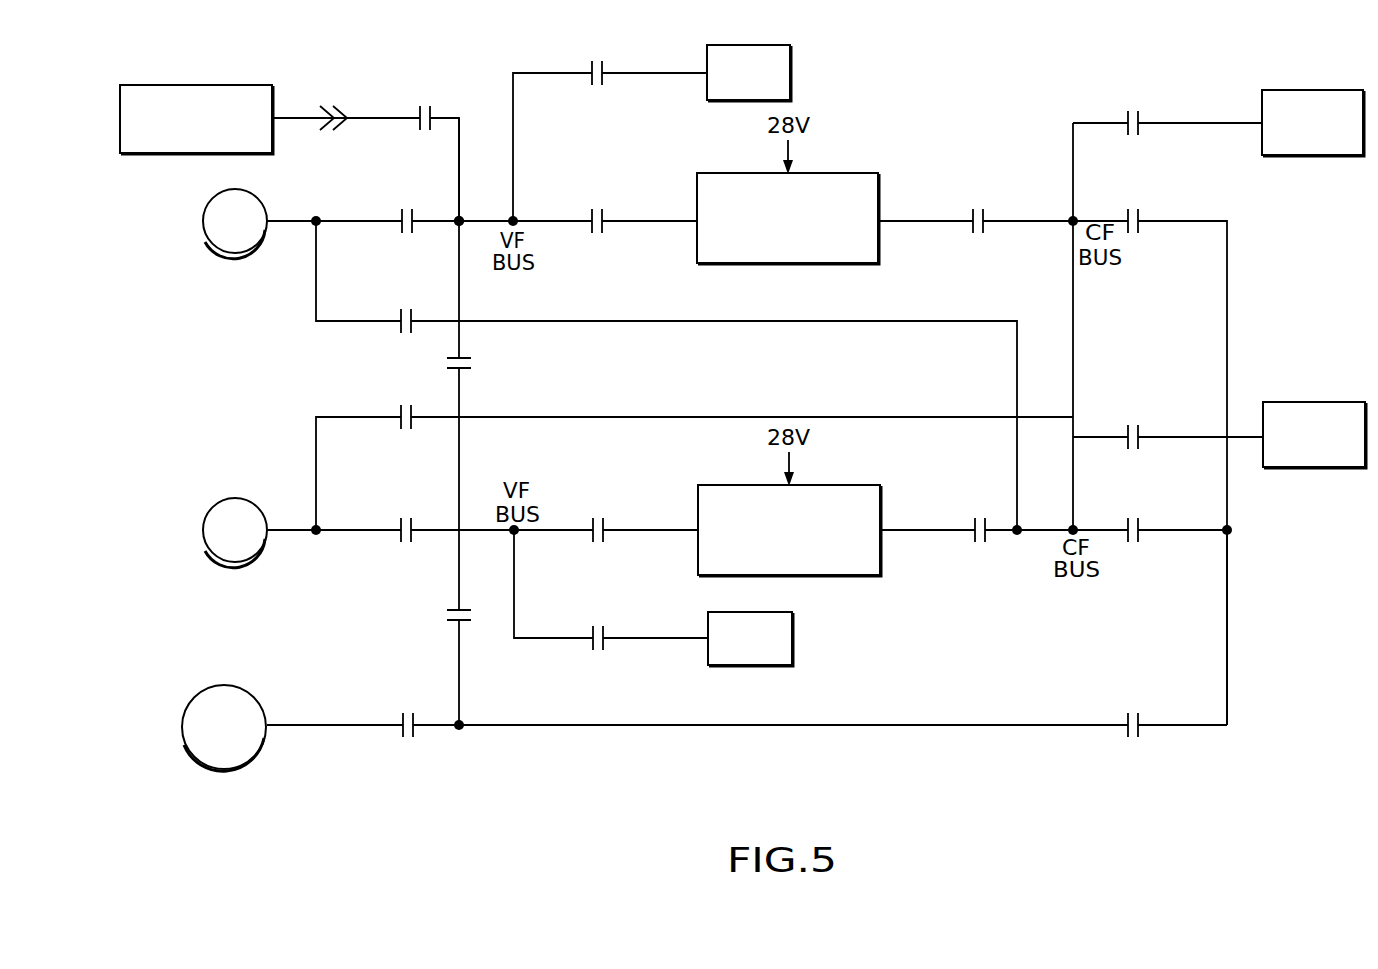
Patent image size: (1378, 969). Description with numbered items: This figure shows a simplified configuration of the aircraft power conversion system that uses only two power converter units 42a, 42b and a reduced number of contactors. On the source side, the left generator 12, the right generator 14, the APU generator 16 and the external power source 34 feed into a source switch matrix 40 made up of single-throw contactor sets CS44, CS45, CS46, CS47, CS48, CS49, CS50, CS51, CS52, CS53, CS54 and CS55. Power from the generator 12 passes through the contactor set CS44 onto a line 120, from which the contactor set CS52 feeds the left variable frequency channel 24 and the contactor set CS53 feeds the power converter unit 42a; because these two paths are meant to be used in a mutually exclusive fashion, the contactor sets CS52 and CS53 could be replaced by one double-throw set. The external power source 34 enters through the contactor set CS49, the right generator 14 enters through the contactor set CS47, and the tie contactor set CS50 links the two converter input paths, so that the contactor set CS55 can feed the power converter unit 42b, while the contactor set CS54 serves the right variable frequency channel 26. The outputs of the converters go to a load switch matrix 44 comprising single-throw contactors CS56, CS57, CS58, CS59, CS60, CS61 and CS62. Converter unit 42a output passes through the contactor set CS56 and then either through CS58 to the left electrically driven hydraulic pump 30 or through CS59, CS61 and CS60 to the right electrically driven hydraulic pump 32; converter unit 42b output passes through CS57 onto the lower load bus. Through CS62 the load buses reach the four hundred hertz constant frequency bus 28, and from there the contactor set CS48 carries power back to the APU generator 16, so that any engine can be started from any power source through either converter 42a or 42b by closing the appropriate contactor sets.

The left generator 12 is at (213, 249).
The right generator 14 is at (215, 507).
The APU generator 16 is at (213, 686).
The left variable frequency channel 24 is at (790, 58).
The right variable frequency channel 26 is at (792, 622).
The 400 Hz constant frequency bus 28 is at (661, 725).
The left electrically driven hydraulic pump 30 is at (1283, 155).
The right electrically driven hydraulic pump 32 is at (1285, 402).
The external power source 34 is at (177, 85).
The source switch matrix 40 is at (450, 58).
The power converter unit 42a is at (823, 173).
The power converter unit 42b is at (823, 485).
The load switch matrix 44 is at (1048, 765).
The line 120 is at (445, 218).
The contactor set CS44 is at (402, 210).
The contactor set CS45 is at (410, 312).
The contactor set CS46 is at (413, 518).
The contactor set CS47 is at (413, 408).
The contactor set CS48 is at (415, 715).
The contactor set CS49 is at (432, 105).
The contactor set CS50 is at (468, 357).
The contactor set CS51 is at (452, 626).
The contactor set CS52 is at (590, 63).
The contactor set CS53 is at (590, 210).
The contactor set CS54 is at (592, 630).
The contactor set CS55 is at (592, 520).
The contactor set CS56 is at (970, 208).
The contactor set CS57 is at (985, 518).
The contactor set CS58 is at (1125, 112).
The contactor set CS59 is at (1125, 208).
The contactor set CS60 is at (1125, 425).
The contactor set CS61 is at (1125, 520).
The contactor set CS62 is at (1125, 715).